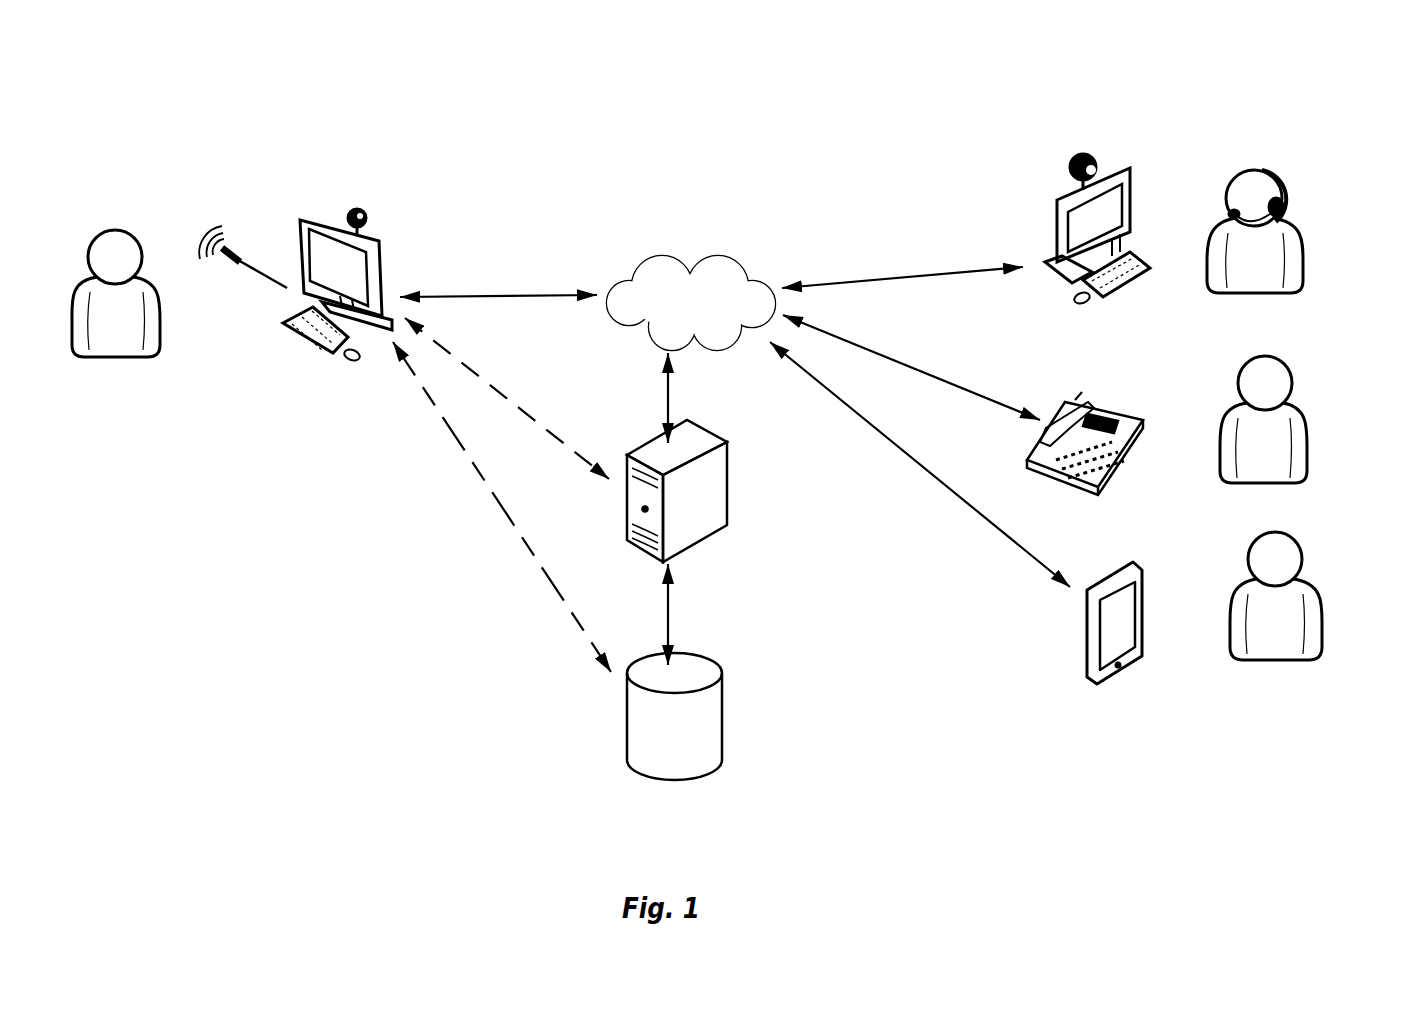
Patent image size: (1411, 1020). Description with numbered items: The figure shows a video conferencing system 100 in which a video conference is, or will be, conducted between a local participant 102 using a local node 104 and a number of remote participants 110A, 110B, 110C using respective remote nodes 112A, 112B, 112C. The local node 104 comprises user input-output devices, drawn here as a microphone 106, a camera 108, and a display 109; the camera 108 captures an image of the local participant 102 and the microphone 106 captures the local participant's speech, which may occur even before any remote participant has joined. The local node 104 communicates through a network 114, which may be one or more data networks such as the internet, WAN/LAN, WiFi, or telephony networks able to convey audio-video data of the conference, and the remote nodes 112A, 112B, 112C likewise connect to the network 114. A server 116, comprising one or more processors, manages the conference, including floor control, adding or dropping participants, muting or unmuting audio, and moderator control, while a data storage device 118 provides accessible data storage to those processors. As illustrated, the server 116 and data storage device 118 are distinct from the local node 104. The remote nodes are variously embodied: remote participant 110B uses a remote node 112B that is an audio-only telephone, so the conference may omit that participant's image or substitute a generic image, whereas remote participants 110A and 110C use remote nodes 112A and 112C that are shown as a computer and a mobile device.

The system 100 is at (1112, 53).
The local participant 102 is at (133, 232).
The local node 104 is at (432, 212).
The microphone 106 is at (258, 277).
The camera 108 is at (366, 210).
The display 109 is at (337, 272).
The remote participant 110A is at (1273, 180).
The remote participant 110B is at (1283, 370).
The remote participant 110C is at (1302, 548).
The remote node 112A is at (1132, 195).
The remote node 112B is at (1120, 413).
The remote node 112C is at (1141, 568).
The network 114 is at (720, 260).
The server 116 is at (718, 490).
The data storage device 118 is at (715, 718).